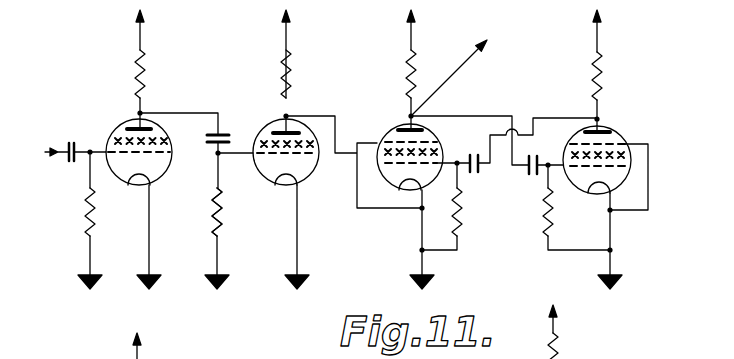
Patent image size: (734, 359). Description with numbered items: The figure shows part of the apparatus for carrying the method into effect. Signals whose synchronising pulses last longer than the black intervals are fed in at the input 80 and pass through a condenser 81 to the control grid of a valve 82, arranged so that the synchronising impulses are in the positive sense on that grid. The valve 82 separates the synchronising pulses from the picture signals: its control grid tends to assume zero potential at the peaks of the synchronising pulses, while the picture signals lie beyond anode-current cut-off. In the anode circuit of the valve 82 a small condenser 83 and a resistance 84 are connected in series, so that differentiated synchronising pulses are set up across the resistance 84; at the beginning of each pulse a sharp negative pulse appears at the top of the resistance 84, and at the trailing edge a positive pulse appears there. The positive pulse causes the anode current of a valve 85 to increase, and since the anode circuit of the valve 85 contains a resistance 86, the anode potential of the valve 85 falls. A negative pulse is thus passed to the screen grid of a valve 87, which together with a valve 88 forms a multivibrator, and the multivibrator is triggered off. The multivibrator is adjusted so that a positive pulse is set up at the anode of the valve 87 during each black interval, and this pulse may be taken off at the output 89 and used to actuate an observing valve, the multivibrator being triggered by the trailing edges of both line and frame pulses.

The input 80 is at (48, 152).
The condenser 81 is at (67, 160).
The valve 82 is at (108, 133).
The condenser 83 is at (220, 132).
The resistance 84 is at (222, 220).
The valve 85 is at (311, 176).
The resistance 86 is at (291, 84).
The valve 87 is at (401, 125).
The valve 88 is at (606, 128).
The output 89 is at (467, 60).